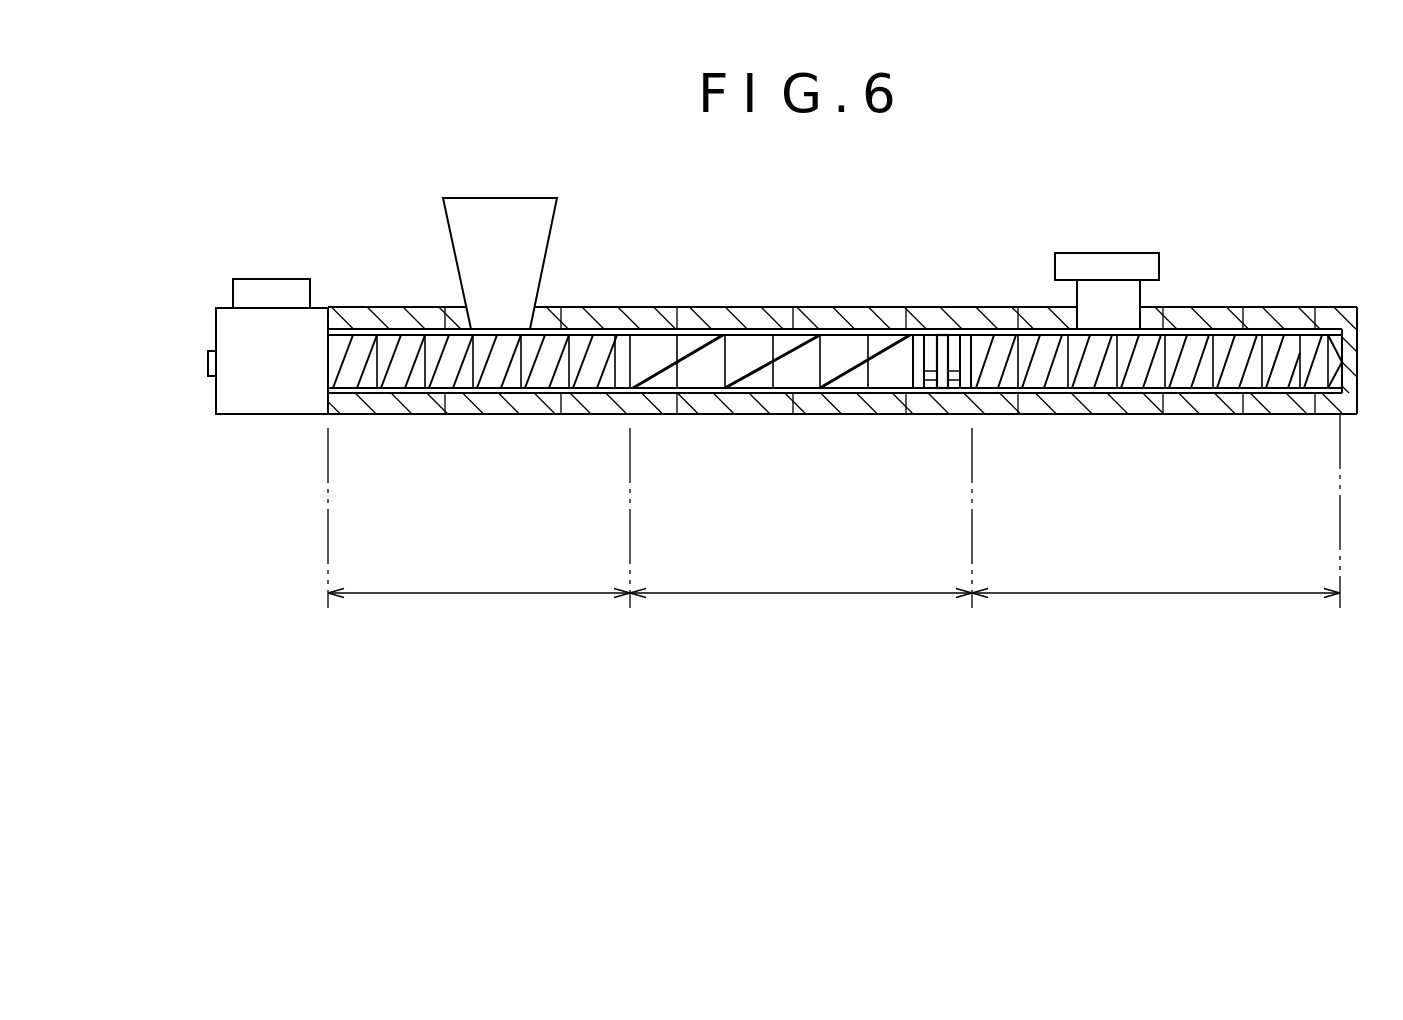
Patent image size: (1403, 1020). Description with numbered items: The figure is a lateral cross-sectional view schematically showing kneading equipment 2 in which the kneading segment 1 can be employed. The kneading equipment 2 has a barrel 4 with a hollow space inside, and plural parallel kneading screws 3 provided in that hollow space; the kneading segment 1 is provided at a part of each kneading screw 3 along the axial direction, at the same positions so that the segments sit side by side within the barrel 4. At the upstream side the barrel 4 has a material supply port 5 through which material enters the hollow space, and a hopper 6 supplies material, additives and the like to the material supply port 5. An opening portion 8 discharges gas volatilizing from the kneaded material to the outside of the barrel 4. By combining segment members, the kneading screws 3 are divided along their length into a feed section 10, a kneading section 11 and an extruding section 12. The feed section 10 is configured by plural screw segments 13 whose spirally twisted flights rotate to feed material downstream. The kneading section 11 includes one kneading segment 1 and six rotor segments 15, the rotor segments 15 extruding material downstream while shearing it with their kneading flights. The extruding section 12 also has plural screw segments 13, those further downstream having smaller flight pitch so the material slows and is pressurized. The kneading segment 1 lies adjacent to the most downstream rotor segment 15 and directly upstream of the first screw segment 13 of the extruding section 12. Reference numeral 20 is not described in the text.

The kneading segment 1 is at (942, 332).
The kneading equipment 2 is at (888, 248).
The kneading screw 3 is at (323, 362).
The barrel 4 is at (1276, 306).
The material supply port 5 is at (477, 318).
The hopper 6 is at (557, 230).
The opening portion 8 is at (1108, 253).
The feed section 10 is at (481, 595).
The kneading section 11 is at (807, 595).
The extruding section 12 is at (1166, 595).
The screw segment 13 is at (475, 377).
The rotor segment 15 is at (760, 380).
The collar 20 is at (931, 390).